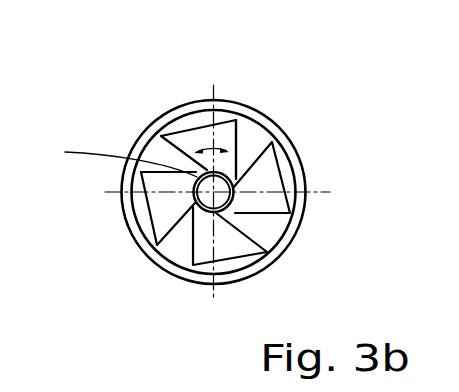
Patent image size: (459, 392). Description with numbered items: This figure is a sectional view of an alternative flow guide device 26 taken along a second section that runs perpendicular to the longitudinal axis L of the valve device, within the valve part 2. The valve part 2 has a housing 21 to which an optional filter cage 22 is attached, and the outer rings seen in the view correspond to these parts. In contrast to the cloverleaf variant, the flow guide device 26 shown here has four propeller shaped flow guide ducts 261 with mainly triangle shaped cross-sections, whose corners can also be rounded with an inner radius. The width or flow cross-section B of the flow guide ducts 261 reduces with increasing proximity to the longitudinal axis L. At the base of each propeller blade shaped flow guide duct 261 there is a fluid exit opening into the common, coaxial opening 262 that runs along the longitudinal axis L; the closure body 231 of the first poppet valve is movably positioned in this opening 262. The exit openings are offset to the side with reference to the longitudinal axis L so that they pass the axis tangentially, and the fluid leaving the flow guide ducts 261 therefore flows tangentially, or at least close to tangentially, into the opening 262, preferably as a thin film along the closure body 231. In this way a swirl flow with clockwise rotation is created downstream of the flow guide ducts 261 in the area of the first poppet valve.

The valve part 2 is at (226, 176).
The housing 21 is at (264, 229).
The filter cage 22 is at (305, 217).
The closure body 231 is at (226, 131).
The flow guide device 26 is at (215, 164).
The flow guide ducts 261 is at (182, 140).
The opening 262 is at (211, 211).
The flow cross-section B is at (211, 148).
The longitudinal axis L is at (122, 157).